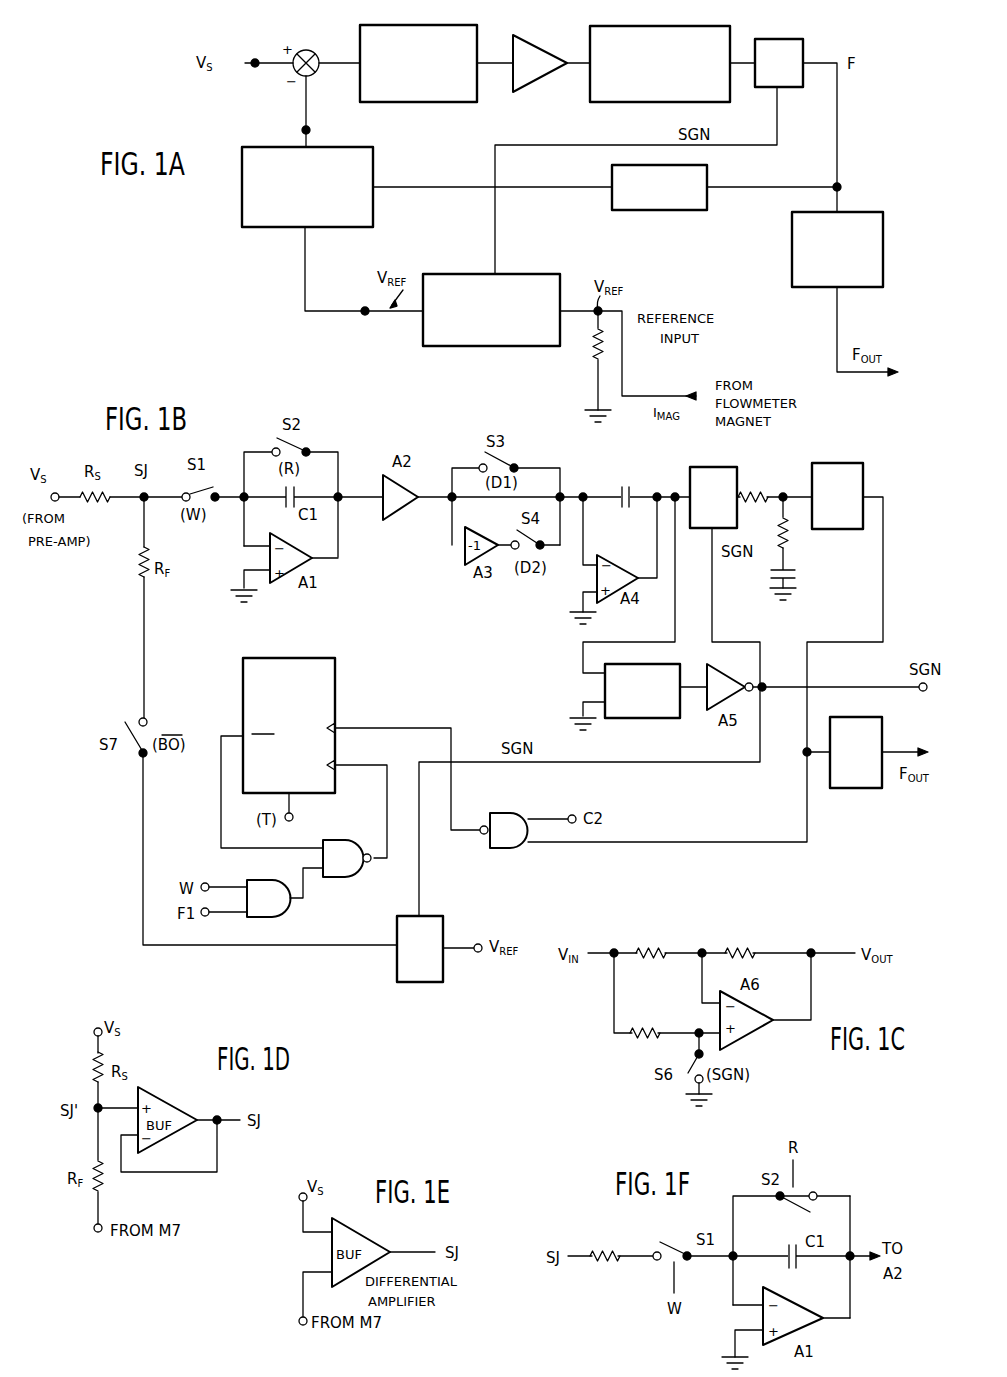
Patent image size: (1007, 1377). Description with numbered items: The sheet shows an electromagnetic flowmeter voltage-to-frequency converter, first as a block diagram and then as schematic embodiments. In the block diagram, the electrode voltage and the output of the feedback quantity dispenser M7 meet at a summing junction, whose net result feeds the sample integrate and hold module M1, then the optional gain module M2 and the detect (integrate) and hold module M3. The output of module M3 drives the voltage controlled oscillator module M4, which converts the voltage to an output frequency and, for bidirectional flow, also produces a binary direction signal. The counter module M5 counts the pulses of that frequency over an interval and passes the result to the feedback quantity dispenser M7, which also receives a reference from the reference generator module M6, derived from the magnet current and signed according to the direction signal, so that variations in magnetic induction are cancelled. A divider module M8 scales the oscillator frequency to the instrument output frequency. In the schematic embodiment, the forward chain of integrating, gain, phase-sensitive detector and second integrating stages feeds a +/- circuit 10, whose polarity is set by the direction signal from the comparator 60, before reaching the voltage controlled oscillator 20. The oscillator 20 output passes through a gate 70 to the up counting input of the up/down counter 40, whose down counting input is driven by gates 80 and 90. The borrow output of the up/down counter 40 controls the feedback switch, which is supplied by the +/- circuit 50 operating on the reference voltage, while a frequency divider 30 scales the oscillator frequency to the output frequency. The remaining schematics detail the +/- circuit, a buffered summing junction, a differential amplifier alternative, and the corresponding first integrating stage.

In FIG. 1A, the sample integrate and hold module M1 is at (437, 25).
In FIG. 1A, the gain module M2 is at (533, 35).
In FIG. 1A, the detect (integrate) and hold module M3 is at (627, 26).
In FIG. 1A, the VCO module M4 is at (789, 38).
In FIG. 1A, the counter module M5 is at (611, 179).
In FIG. 1A, the reference generator module M6 is at (520, 274).
In FIG. 1A, the feedback quantity dispenser M7 is at (318, 147).
In FIG. 1A, the divider module M8 is at (853, 212).
In FIG. 1B, the +/- circuit 10 is at (690, 473).
In FIG. 1B, the VCO 20 is at (864, 466).
In FIG. 1B, the frequency divider 30 is at (845, 789).
In FIG. 1B, the up/down counter 40 is at (293, 658).
In FIG. 1B, the +/- circuit 50 is at (397, 967).
In FIG. 1B, the comparator 60 is at (652, 718).
In FIG. 1B, the gate 70 is at (495, 811).
In FIG. 1B, the gate 80 is at (333, 840).
In FIG. 1B, the gate 90 is at (278, 916).